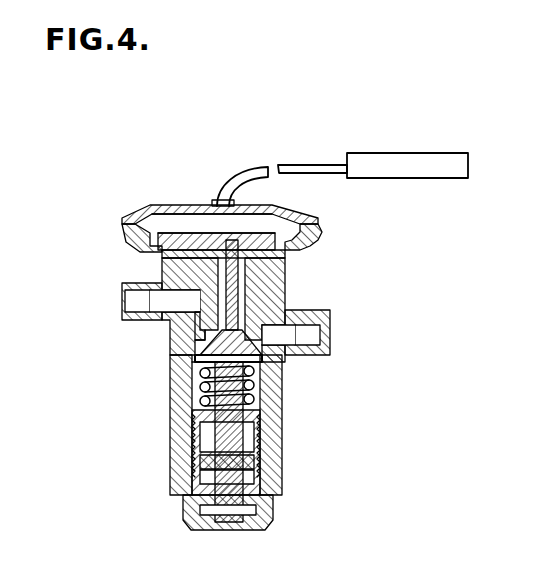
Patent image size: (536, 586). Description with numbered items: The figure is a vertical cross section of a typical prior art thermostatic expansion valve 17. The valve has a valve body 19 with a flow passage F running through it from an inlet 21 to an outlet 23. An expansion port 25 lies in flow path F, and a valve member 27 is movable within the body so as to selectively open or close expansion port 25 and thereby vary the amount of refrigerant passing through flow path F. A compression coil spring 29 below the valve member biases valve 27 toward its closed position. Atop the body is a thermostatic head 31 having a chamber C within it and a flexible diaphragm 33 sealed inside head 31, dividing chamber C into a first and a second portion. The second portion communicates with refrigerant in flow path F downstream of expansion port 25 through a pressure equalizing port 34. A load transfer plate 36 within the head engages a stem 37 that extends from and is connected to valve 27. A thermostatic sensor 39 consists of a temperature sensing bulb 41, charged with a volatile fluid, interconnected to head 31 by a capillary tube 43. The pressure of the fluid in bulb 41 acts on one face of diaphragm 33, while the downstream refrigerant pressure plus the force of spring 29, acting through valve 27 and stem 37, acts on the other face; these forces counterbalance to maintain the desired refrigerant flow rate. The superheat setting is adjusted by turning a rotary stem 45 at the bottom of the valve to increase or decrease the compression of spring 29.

The thermostatic expansion valve 17 is at (296, 486).
The valve body 19 is at (170, 437).
The inlet 21 is at (136, 296).
The outlet 23 is at (324, 328).
The expansion port 25 is at (198, 350).
The valve member 27 is at (268, 338).
The compression coil spring 29 is at (258, 372).
The thermostatic head 31 is at (321, 230).
The flexible diaphragm 33 is at (270, 208).
The pressure equalizing port 34 is at (268, 270).
The load transfer plate 36 is at (158, 248).
The stem 37 is at (165, 270).
The thermostatic sensor 39 is at (370, 146).
The temperature sensing bulb 41 is at (436, 152).
The capillary tube 43 is at (308, 164).
The rotary stem 45 is at (186, 456).
The chamber C is at (173, 208).
The flow passage F is at (187, 305).